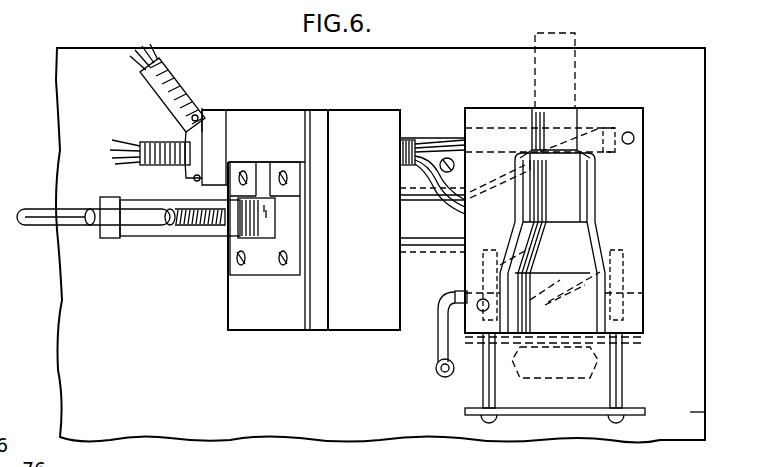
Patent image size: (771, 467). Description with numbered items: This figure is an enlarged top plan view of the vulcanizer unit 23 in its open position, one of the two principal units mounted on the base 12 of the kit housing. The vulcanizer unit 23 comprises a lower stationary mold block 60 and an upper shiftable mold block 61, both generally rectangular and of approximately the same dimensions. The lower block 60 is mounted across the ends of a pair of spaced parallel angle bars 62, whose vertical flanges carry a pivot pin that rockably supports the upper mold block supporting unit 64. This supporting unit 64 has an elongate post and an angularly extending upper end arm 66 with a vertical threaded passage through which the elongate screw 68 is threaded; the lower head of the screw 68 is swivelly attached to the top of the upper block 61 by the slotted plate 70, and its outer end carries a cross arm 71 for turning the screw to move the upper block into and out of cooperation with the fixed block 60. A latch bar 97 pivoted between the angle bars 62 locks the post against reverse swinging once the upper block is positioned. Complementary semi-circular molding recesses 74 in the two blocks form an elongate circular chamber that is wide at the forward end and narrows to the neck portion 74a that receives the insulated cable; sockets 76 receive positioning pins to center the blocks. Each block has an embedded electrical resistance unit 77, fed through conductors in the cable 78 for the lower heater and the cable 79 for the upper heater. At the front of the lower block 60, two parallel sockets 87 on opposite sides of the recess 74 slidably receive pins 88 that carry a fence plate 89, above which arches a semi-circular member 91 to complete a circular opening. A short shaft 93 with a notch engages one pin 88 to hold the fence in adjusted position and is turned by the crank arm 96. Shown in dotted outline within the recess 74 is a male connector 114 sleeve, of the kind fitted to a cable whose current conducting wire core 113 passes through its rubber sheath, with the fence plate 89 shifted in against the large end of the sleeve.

The base 12 is at (705, 412).
The vulcanizer unit 23 is at (689, 194).
The lower stationary mold block 60 is at (632, 300).
The upper shiftable mold block 61 is at (358, 318).
The angle bars 62 is at (406, 250).
The upper mold block supporting unit 64 is at (161, 244).
The upper end arm 66 is at (220, 234).
The elongate screw 68 is at (192, 208).
The slotted plate 70 is at (270, 274).
The cross arm 71 is at (40, 226).
The molding recesses 74 is at (600, 228).
The neck portion 74a is at (572, 118).
The sockets 76 is at (634, 138).
The electrical resistance unit 77 is at (490, 122).
The cable 78 is at (150, 148).
The cable 79 is at (186, 98).
The sockets 87 is at (622, 274).
The pins 88 is at (484, 393).
The fence plate 89 is at (512, 416).
The semi-circular member 91 is at (592, 416).
The short shaft 93 is at (458, 292).
The crank arm 96 is at (438, 352).
The latch bar 97 is at (108, 234).
The current conducting wire core 113 is at (578, 33).
The male connector 114 is at (612, 176).